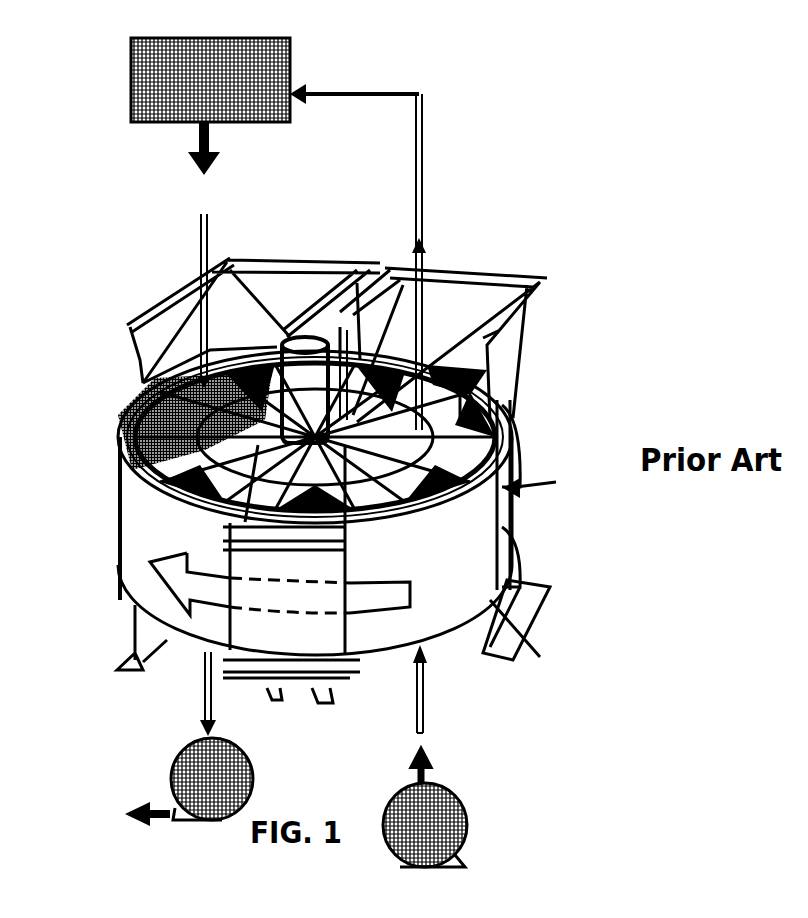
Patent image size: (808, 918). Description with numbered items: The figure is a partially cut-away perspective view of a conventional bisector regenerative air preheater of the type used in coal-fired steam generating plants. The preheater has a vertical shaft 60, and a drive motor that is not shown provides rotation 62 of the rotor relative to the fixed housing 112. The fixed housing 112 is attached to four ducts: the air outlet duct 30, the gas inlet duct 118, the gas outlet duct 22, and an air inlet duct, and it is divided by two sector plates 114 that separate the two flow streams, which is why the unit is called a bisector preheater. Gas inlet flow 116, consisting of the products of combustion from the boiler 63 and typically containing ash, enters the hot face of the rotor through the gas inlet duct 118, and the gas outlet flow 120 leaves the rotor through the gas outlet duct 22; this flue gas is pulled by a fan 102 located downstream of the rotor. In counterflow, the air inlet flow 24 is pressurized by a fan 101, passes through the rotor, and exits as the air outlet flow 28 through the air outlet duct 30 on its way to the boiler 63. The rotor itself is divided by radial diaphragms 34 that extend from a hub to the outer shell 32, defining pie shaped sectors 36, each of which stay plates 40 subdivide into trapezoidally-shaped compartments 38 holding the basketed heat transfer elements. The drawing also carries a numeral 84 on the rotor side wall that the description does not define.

The boiler 63 is at (210, 106).
The gas inlet flow 116 is at (204, 230).
The air outlet flow 28 is at (424, 240).
The gas inlet duct 118 is at (272, 282).
The air outlet duct 30 is at (453, 297).
The outer shell 32 is at (133, 590).
The diaphragms 34 is at (145, 492).
The drum side wall 84 is at (108, 478).
The pie shaped sectors 36 is at (120, 405).
The trapezoidally-shaped compartments 38 is at (122, 437).
The vertical shaft 60 is at (343, 362).
The stay plates 40 is at (440, 495).
The fixed housing 112 is at (549, 481).
The sector plate 114 is at (355, 522).
The rotation 62 is at (158, 566).
The gas outlet duct 22 is at (153, 647).
The gas outlet flow 120 is at (202, 698).
The air inlet flow 24 is at (430, 750).
The fan 102 is at (189, 782).
The fan 101 is at (425, 825).